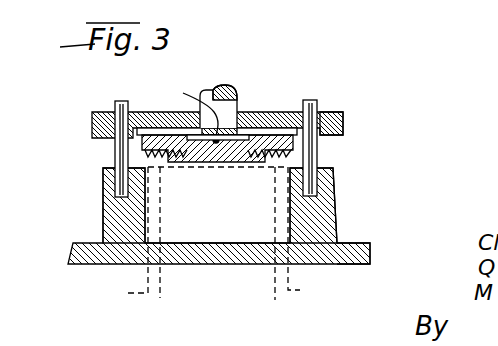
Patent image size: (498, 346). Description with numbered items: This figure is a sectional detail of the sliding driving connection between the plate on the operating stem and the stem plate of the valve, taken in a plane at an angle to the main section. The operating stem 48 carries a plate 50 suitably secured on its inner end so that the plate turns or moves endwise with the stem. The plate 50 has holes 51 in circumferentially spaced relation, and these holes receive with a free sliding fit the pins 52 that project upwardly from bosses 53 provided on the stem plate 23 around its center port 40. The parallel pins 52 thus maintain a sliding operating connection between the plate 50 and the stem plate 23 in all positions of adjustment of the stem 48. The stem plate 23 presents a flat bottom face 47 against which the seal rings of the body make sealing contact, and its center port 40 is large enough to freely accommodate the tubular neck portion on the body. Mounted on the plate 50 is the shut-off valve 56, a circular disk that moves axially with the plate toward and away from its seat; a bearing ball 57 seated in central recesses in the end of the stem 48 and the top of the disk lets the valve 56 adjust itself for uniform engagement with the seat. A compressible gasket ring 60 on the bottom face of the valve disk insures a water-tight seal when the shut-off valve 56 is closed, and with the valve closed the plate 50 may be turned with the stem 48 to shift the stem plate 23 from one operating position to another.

The stem plate 23 is at (358, 243).
The center port 40 is at (203, 253).
The flat bottom face 47 is at (346, 263).
The operating stem 48 is at (228, 93).
The plate 50 is at (340, 113).
The holes 51 is at (343, 121).
The pins 52 is at (311, 98).
The bosses 53 is at (333, 212).
The shut-off valve 56 is at (214, 167).
The bearing ball 57 is at (185, 111).
The compressible gasket ring 60 is at (281, 157).